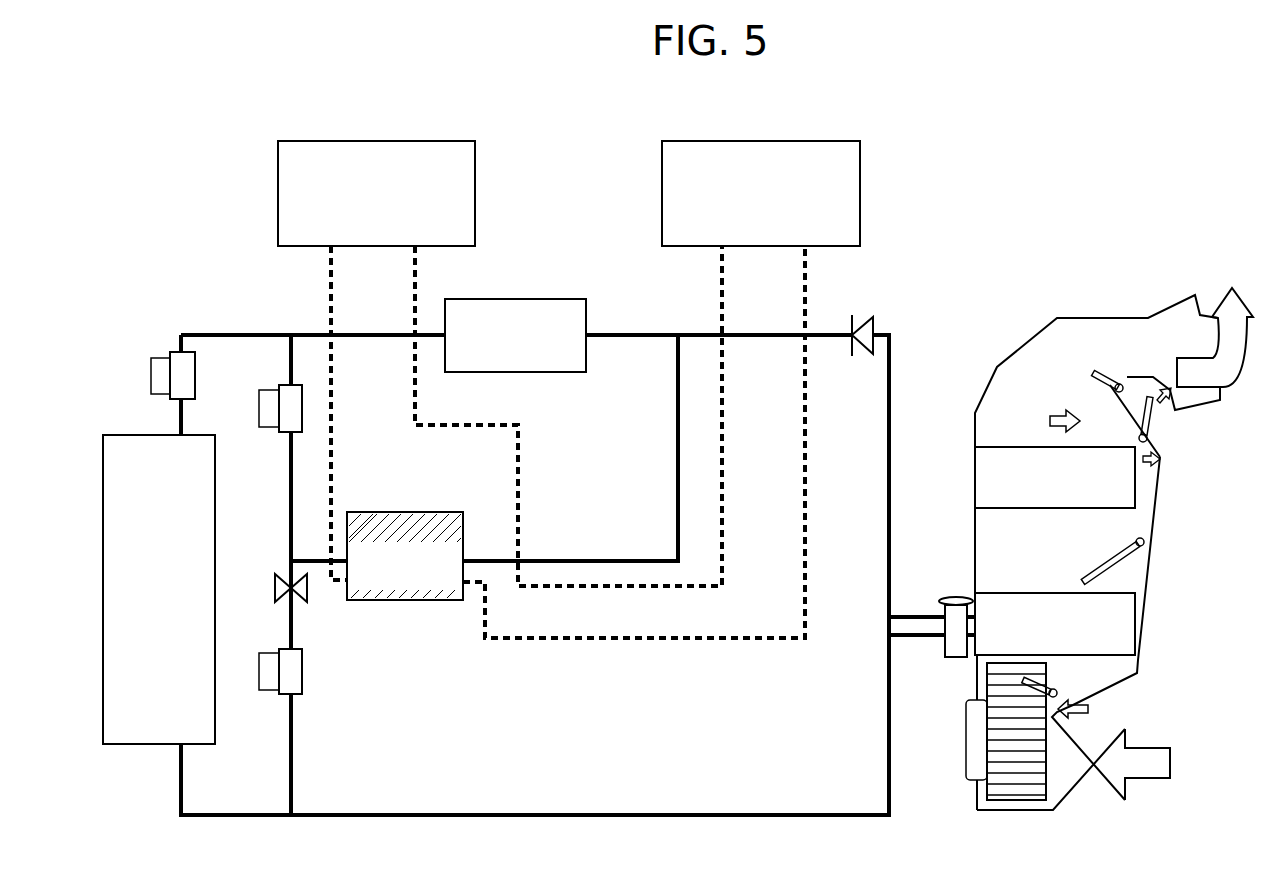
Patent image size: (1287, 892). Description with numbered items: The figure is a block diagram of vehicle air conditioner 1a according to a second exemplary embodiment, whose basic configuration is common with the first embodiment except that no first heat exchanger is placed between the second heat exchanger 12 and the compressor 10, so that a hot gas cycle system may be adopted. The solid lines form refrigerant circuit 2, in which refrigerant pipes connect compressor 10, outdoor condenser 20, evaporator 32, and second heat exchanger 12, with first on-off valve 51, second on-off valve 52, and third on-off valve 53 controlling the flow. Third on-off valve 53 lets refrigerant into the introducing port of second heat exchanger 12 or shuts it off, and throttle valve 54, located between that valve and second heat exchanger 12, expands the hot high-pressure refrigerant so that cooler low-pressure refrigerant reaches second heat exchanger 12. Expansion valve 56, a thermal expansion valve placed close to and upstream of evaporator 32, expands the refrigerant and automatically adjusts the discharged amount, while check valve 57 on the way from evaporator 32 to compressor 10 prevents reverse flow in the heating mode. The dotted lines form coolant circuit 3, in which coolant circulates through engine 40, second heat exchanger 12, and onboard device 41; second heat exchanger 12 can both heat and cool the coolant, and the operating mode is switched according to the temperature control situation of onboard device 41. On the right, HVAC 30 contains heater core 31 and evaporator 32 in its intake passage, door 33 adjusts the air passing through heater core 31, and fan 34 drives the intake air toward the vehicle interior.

The vehicle air conditioner 1a is at (962, 172).
The refrigerant circuit 2 is at (219, 322).
The coolant circuit 3 is at (745, 640).
The compressor 10 is at (517, 299).
The second heat exchanger 12 is at (401, 512).
The outdoor condenser 20 is at (217, 470).
The HVAC 30 is at (1150, 441).
The heater core 31 is at (1137, 482).
The evaporator 32 is at (1137, 620).
The door 33 is at (1125, 563).
The fan 34 is at (1017, 800).
The engine 40 is at (476, 188).
The onboard device 41 is at (861, 188).
The first on-off valve 51 is at (163, 358).
The second on-off valve 52 is at (269, 390).
The third on-off valve 53 is at (303, 668).
The throttle valve 54 is at (275, 590).
The expansion valve 56 is at (955, 597).
The check valve 57 is at (862, 317).